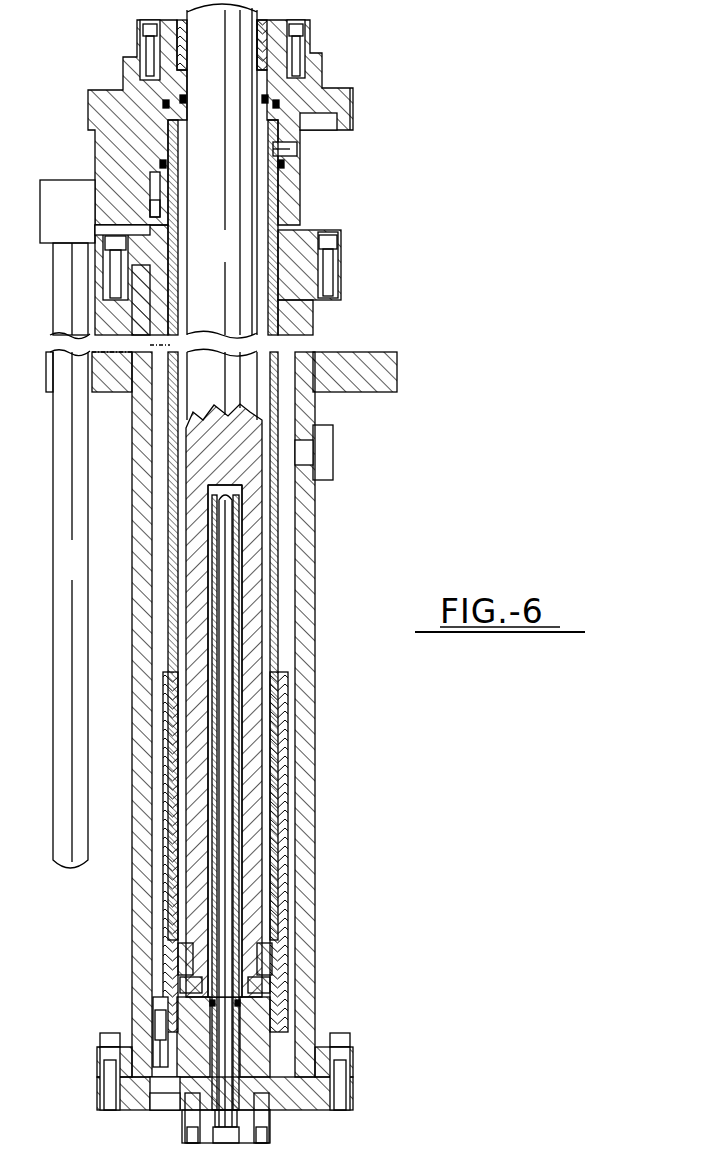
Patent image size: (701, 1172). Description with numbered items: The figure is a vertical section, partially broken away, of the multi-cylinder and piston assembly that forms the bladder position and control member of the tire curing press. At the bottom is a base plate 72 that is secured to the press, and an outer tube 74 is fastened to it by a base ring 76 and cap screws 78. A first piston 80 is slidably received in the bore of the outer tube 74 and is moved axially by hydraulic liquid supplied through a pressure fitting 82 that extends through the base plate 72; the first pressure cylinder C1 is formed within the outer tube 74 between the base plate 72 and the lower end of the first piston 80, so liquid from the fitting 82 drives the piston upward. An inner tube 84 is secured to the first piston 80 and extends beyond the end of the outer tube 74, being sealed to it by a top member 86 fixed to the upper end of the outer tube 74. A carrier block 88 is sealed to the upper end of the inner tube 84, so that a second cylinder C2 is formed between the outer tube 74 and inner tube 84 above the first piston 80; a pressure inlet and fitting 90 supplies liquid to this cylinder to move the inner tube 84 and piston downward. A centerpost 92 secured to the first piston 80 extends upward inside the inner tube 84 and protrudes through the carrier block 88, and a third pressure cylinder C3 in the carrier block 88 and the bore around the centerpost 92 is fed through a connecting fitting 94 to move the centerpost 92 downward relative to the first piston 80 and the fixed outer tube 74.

The third pressure cylinder C3 is at (278, 22).
The carrier block 88 is at (342, 92).
The connecting fitting 94 is at (298, 150).
The top member 86 is at (340, 250).
The inner tube 84 is at (276, 560).
The outer tube 74 is at (314, 760).
The centerpost 92 is at (250, 455).
The first pressure cylinder C1 is at (258, 807).
The second cylinder C2 is at (283, 688).
The pressure inlet and fitting 90 is at (326, 448).
The first piston 80 is at (185, 1060).
The base plate 72 is at (300, 1112).
The base ring 76 is at (354, 1070).
The cap screws 78 is at (340, 1034).
The pressure fitting 82 is at (165, 1112).